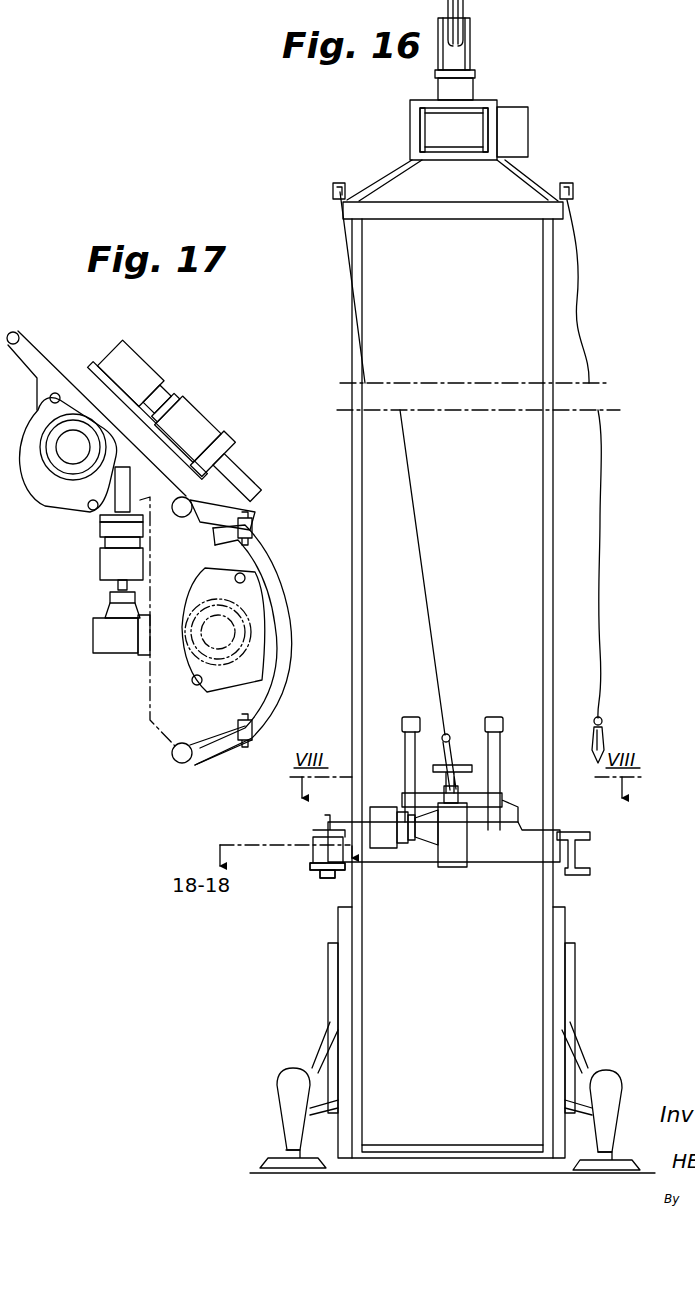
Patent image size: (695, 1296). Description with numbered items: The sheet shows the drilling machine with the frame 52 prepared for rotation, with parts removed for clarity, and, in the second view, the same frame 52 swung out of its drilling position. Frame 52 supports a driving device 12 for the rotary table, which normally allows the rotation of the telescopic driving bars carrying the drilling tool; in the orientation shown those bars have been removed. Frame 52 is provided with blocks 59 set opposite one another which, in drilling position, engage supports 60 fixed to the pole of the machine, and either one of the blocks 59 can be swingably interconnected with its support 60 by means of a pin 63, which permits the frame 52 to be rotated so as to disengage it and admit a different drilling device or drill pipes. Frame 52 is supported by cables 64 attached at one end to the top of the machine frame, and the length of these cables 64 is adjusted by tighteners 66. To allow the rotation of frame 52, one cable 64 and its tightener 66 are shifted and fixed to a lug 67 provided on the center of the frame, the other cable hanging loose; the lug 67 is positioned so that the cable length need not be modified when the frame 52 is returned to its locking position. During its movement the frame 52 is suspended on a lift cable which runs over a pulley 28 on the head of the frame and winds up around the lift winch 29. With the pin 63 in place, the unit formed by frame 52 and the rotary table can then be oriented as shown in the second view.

In FIG. 16, the driving device 12 is at (385, 845).
In FIG. 17, the driving device 12 is at (152, 366).
In FIG. 16, the pulley 28 is at (466, 10).
In FIG. 16, the lift winch 29 is at (530, 131).
In FIG. 16, the frame 52 is at (507, 864).
In FIG. 17, the frame 52 is at (70, 368).
In FIG. 16, the blocks 59 is at (577, 866).
In FIG. 16, the supports 60 is at (345, 868).
In FIG. 16, the pin 63 is at (322, 871).
In FIG. 17, the pin 63 is at (200, 505).
In FIG. 16, the cables 64 is at (435, 630).
In FIG. 16, the tighteners 66 is at (603, 742).
In FIG. 16, the lug 67 is at (460, 790).